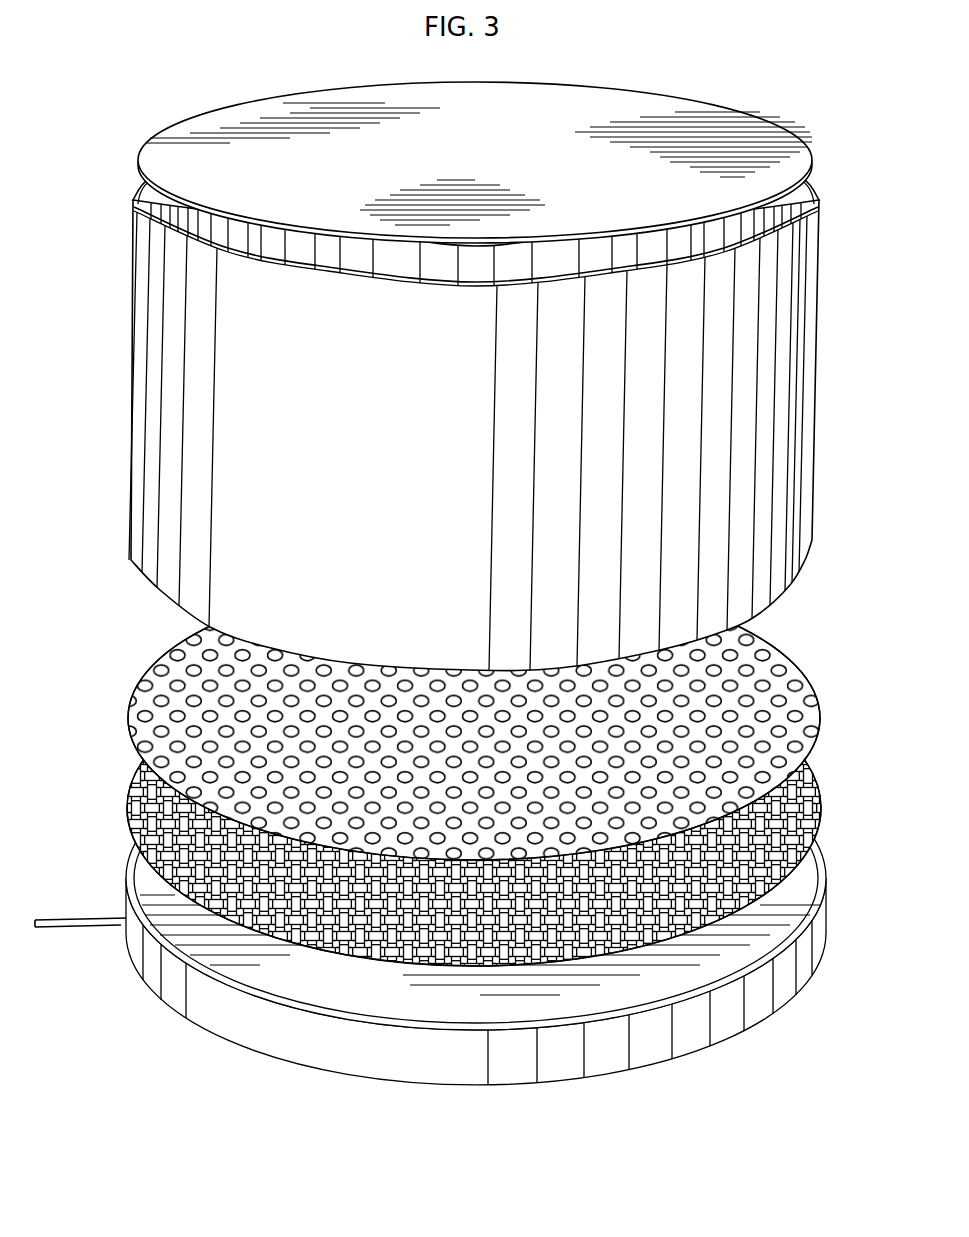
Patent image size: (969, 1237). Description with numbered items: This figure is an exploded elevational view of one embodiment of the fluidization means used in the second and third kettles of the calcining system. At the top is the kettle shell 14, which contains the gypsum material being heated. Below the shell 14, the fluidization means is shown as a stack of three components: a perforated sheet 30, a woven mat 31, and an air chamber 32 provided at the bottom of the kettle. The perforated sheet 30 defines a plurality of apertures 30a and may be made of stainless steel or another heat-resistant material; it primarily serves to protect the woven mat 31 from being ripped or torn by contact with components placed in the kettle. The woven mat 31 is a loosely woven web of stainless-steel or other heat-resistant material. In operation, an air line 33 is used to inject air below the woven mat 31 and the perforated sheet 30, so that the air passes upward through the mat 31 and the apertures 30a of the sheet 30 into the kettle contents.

The kettle shell 14 is at (790, 347).
The perforated sheet 30 is at (495, 718).
The apertures 30a is at (722, 672).
The woven mat 31 is at (807, 790).
The air chamber 32 is at (823, 888).
The air line 33 is at (85, 928).